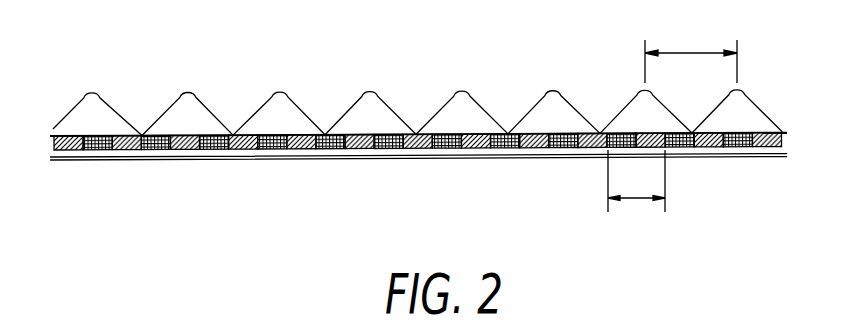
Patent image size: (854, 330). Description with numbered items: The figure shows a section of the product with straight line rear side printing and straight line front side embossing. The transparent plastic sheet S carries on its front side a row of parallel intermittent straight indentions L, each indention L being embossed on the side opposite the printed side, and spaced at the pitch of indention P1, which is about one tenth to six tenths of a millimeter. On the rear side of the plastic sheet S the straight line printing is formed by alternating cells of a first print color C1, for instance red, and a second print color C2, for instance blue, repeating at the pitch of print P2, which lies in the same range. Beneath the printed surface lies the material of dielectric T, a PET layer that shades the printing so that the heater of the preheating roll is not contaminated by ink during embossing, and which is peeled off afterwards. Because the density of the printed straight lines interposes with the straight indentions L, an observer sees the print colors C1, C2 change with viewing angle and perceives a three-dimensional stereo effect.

The plastic sheet S is at (418, 101).
The indention L is at (417, 81).
The print color C1 is at (350, 179).
The print color C2 is at (410, 179).
The material of dielectric T is at (418, 185).
The pitch of indention P1 is at (691, 52).
The pitch of print P2 is at (636, 181).